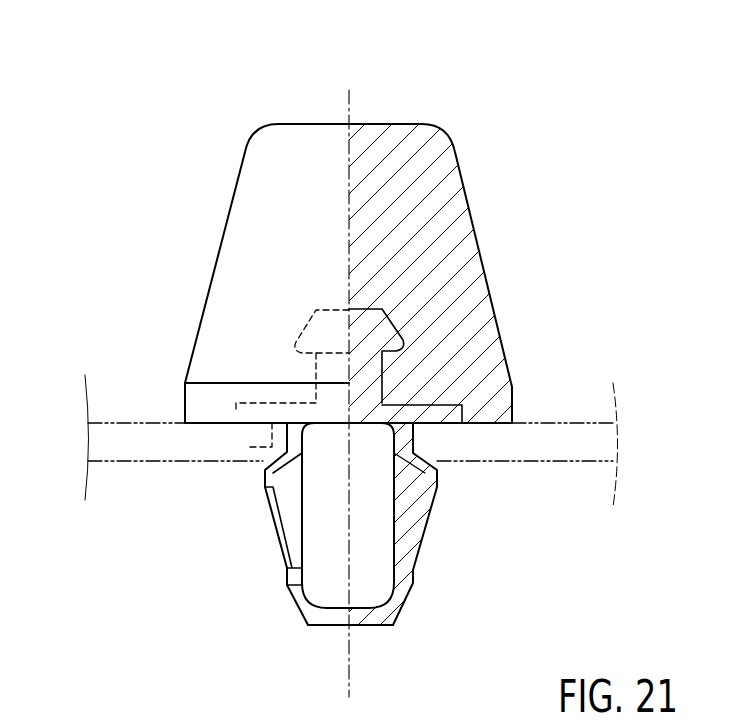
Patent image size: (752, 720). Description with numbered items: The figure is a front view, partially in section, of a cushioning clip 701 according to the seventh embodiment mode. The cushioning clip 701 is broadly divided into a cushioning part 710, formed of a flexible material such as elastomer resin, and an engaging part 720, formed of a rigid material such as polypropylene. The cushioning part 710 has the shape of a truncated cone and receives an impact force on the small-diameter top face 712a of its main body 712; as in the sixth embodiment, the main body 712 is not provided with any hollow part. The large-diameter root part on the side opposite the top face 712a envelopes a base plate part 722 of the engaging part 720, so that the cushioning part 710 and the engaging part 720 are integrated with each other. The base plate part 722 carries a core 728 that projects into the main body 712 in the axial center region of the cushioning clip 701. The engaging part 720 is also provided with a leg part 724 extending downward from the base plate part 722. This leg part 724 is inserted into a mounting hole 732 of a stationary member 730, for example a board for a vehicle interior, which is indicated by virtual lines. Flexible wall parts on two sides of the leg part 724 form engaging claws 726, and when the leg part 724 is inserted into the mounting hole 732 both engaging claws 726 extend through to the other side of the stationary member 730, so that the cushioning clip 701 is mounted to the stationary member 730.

The cushioning clip 701 is at (549, 228).
The cushioning part 710 is at (188, 167).
The main body 712 is at (453, 183).
The top face 712a is at (375, 118).
The engaging part 720 is at (447, 543).
The base plate part 722 is at (447, 410).
The leg part 724 is at (324, 583).
The engaging claws 726 is at (433, 488).
The core 728 is at (362, 326).
The stationary member 730 is at (558, 432).
The mounting hole 732 is at (262, 443).